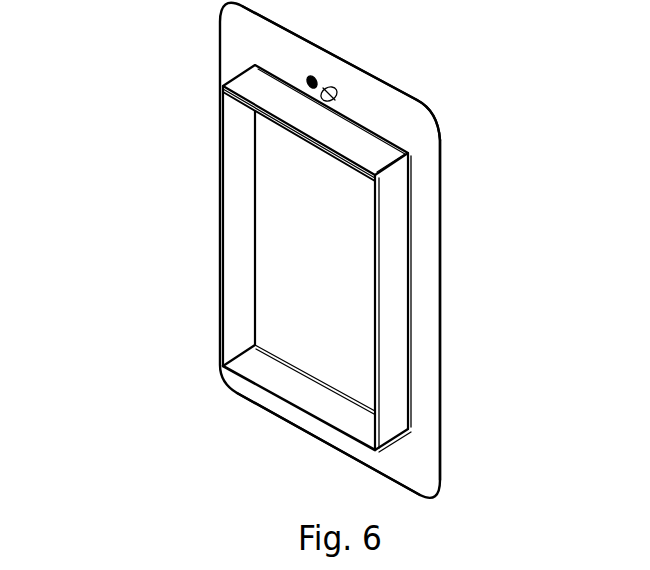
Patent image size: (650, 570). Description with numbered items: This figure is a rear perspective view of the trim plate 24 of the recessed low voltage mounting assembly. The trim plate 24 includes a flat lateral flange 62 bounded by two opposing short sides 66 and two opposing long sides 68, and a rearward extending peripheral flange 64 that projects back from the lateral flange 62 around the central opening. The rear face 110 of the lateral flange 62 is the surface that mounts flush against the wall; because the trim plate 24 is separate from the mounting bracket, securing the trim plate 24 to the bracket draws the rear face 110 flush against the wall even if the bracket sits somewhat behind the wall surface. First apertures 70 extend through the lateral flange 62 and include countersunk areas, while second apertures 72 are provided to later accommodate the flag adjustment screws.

The trim plate 24 is at (146, 93).
The lateral flange 62 is at (417, 128).
The rearward extending peripheral flange 64 is at (228, 227).
The opposing short sides 66 is at (323, 50).
The opposing long sides 68 is at (441, 270).
The first apertures 70 is at (329, 101).
The second apertures 72 is at (310, 88).
The rear face 110 is at (370, 121).